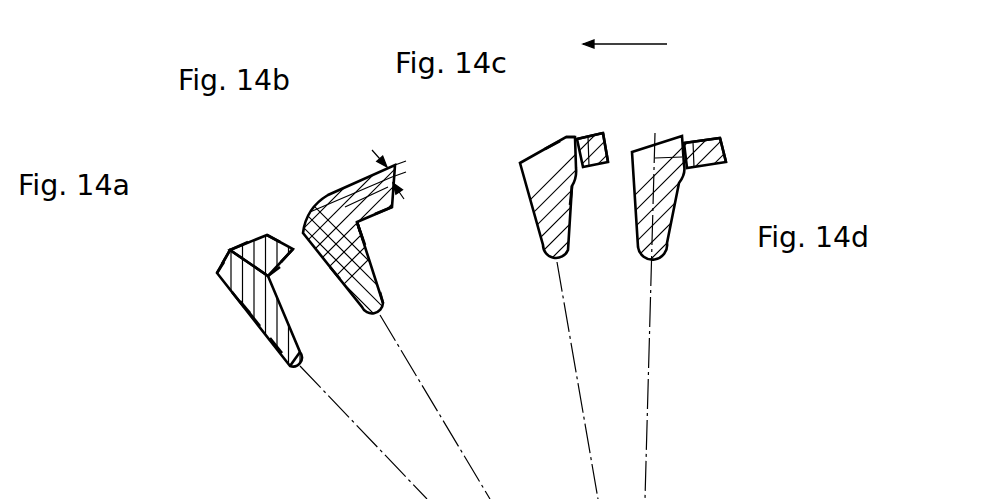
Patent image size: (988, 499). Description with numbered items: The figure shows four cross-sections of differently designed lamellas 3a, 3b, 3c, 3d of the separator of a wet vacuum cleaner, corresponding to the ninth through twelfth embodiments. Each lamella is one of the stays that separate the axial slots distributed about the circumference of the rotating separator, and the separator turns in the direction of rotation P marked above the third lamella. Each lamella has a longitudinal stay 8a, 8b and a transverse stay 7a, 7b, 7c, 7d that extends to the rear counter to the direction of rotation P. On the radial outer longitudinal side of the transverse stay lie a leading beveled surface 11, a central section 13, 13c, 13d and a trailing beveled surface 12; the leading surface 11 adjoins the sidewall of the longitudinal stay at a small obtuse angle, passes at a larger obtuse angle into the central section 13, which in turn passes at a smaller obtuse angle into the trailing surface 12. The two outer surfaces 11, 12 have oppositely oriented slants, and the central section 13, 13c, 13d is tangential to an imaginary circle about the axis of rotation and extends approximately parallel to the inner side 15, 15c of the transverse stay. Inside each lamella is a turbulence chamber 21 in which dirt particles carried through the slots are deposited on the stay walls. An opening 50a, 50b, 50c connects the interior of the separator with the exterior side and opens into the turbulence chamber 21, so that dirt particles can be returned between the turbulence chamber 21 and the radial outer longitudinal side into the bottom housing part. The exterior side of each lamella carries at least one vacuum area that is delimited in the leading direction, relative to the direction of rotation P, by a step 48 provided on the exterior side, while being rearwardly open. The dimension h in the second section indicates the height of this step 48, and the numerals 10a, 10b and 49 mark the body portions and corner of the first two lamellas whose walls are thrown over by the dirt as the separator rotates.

In FIG. 14A, the lamella 3a is at (230, 249).
In FIG. 14B, the lamella 3b is at (327, 178).
In FIG. 14C, the lamella 3c is at (561, 122).
In FIG. 14D, the lamella 3d is at (695, 134).
In FIG. 14A, the transverse stay 7a is at (262, 270).
In FIG. 14B, the transverse stay 7b is at (372, 206).
In FIG. 14C, the transverse stay 7c is at (553, 190).
In FIG. 14D, the transverse stay 7d is at (720, 158).
In FIG. 14A, the longitudinal stay 8a is at (240, 318).
In FIG. 14B, the longitudinal stay 8b is at (340, 258).
In FIG. 14A, the tooth body 10a is at (287, 280).
In FIG. 14B, the tooth body 10b is at (384, 305).
In FIG. 14A, the leading beveled surface 11 is at (218, 275).
In FIG. 14A, the trailing beveled surface 12 is at (274, 243).
In FIG. 14A, the central section 13 is at (283, 237).
In FIG. 14C, the central section 13c is at (573, 192).
In FIG. 14D, the central section 13d is at (709, 145).
In FIG. 14A, the inner side 15 is at (282, 345).
In FIG. 14C, the inner side 15c is at (611, 152).
In FIG. 14A, the turbulence chamber 21 is at (256, 322).
In FIG. 14B, the turbulence chamber 21 is at (360, 241).
In FIG. 14A, the step 48 is at (232, 252).
In FIG. 14B, the step 48 is at (360, 240).
In FIG. 14C, the step 48 is at (567, 182).
In FIG. 14A, the tooth corner 49 is at (230, 250).
In FIG. 14A, the opening 50a is at (248, 300).
In FIG. 14B, the opening 50b is at (358, 232).
In FIG. 14C, the opening 50c is at (572, 200).
In FIG. 14B, the height dimension h is at (391, 169).
In FIG. 14C, the direction of rotation P is at (634, 40).